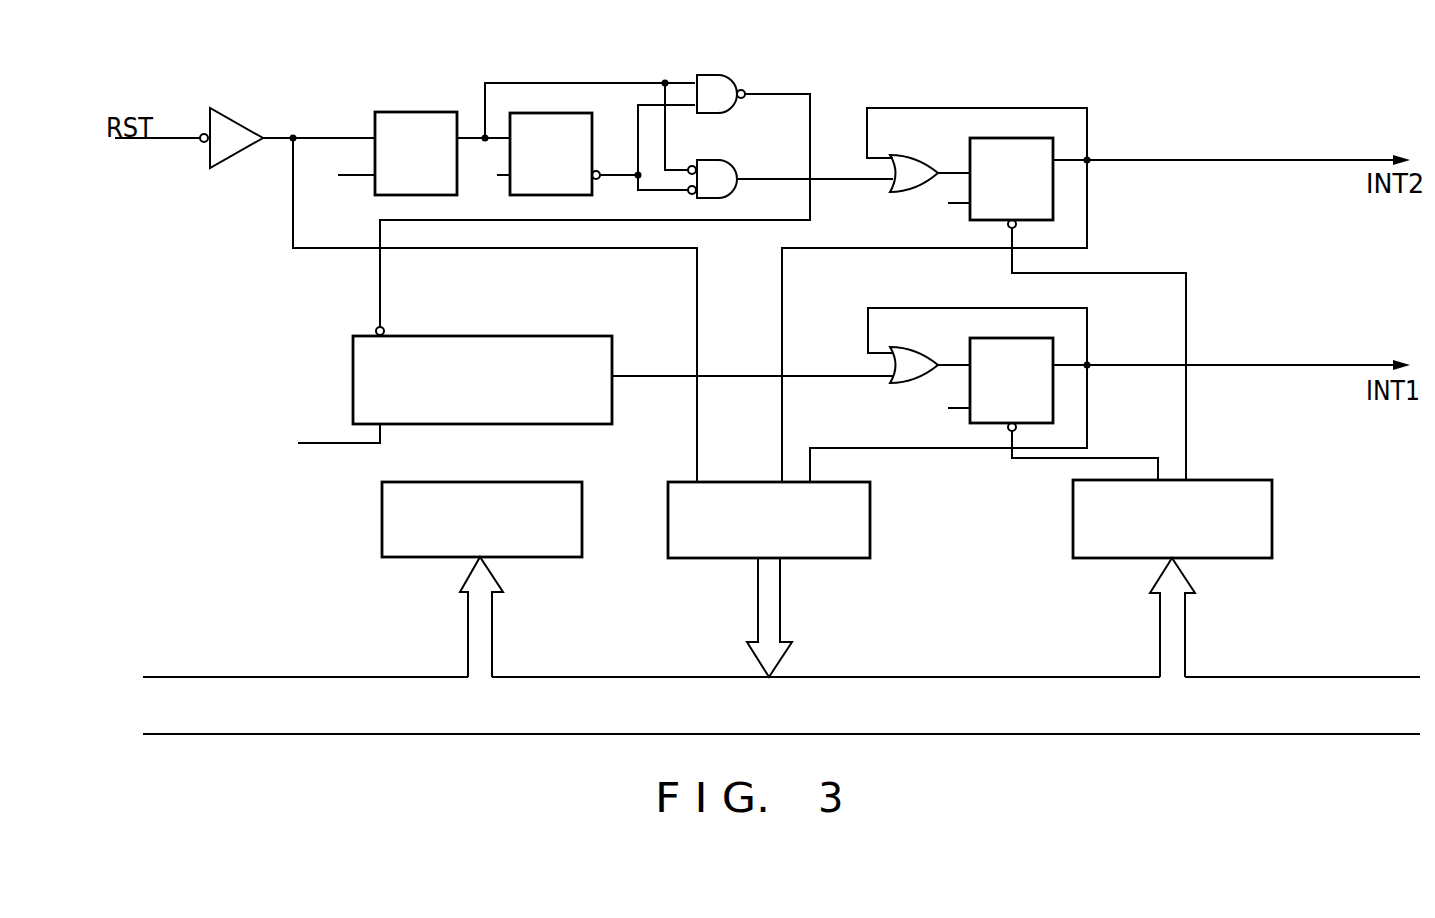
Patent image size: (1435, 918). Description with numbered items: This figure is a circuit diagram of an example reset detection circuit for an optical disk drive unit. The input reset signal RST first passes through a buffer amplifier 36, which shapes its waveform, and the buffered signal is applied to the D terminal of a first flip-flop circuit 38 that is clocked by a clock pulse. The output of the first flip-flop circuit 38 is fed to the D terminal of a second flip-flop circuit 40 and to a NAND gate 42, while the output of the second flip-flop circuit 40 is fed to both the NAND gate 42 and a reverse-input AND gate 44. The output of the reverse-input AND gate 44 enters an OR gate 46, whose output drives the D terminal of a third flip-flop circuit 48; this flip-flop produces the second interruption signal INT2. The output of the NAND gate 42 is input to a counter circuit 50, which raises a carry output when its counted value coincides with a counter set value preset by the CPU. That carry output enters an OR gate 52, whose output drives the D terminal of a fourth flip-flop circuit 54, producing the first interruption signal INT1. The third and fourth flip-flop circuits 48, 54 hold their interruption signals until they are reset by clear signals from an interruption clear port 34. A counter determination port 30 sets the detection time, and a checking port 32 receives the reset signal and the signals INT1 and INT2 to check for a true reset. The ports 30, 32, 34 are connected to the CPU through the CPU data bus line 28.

The CPU data bus line 28 is at (975, 677).
The counter determination port 30 is at (547, 557).
The checking port 32 is at (832, 558).
The interruption clear port 34 is at (1243, 558).
The buffer amplifier 36 is at (242, 123).
The first flip-flop circuit 38 is at (418, 112).
The second flip-flop circuit 40 is at (567, 113).
The NAND gate 42 is at (728, 75).
The reverse-input AND gate 44 is at (735, 162).
The OR gate 46 is at (918, 155).
The third flip-flop circuit 48 is at (1012, 138).
The counter circuit 50 is at (497, 336).
The OR gate 52 is at (923, 347).
The fourth flip-flop circuit 54 is at (1013, 338).